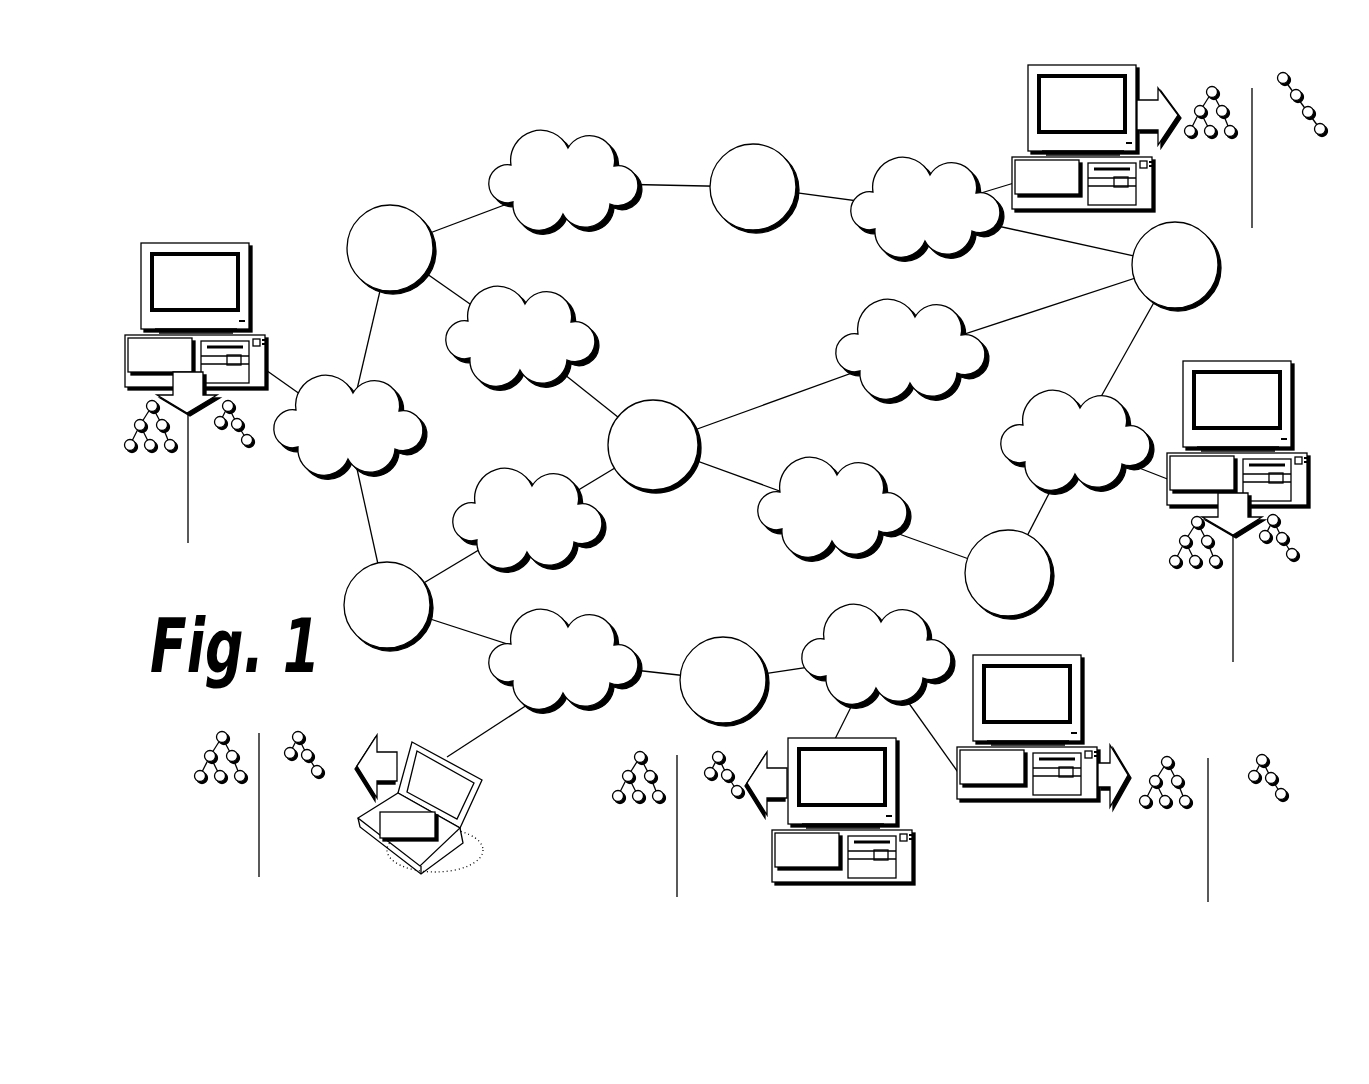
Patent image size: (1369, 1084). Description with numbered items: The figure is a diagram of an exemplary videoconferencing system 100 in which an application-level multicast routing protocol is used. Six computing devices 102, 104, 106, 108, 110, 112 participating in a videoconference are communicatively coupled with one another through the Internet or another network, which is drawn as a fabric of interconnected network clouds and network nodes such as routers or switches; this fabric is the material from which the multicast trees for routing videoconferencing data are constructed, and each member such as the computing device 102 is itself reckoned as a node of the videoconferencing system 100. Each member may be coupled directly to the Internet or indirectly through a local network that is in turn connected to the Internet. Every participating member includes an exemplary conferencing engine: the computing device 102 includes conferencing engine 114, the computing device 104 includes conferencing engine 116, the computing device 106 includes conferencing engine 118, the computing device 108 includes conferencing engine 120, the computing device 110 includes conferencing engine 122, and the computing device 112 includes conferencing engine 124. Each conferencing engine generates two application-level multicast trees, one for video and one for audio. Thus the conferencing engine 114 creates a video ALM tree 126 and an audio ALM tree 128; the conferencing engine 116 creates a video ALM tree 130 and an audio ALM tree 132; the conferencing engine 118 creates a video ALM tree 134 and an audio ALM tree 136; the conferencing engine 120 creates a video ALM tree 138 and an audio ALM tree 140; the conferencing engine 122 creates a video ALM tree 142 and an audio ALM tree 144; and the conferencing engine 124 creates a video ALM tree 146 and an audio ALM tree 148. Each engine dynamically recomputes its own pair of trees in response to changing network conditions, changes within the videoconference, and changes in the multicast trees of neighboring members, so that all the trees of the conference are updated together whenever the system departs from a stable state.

The videoconferencing system 100 is at (358, 149).
The computing device 102 is at (192, 310).
The computing device 104 is at (459, 804).
The computing device 106 is at (872, 815).
The computing device 108 is at (1044, 744).
The computing device 110 is at (1246, 431).
The computing device 112 is at (1062, 138).
The conferencing engine 114 is at (161, 356).
The conferencing engine 116 is at (409, 826).
The conferencing engine 118 is at (808, 851).
The conferencing engine 120 is at (993, 768).
The conferencing engine 122 is at (1203, 474).
The conferencing engine 124 is at (1048, 178).
The video ALM tree 126 is at (143, 469).
The audio ALM tree 128 is at (237, 469).
The video ALM tree 130 is at (213, 800).
The audio ALM tree 132 is at (303, 800).
The video ALM tree 134 is at (632, 820).
The audio ALM tree 136 is at (723, 820).
The video ALM tree 138 is at (1163, 826).
The audio ALM tree 140 is at (1257, 825).
The video ALM tree 142 is at (1188, 585).
The audio ALM tree 144 is at (1282, 584).
The video ALM tree 146 is at (1205, 154).
The audio ALM tree 148 is at (1298, 147).